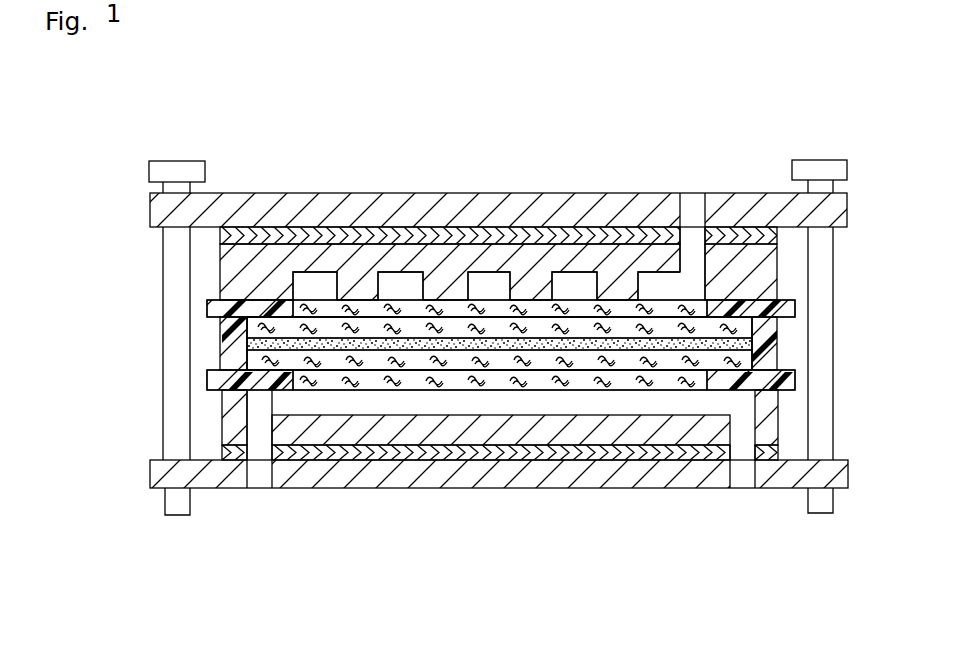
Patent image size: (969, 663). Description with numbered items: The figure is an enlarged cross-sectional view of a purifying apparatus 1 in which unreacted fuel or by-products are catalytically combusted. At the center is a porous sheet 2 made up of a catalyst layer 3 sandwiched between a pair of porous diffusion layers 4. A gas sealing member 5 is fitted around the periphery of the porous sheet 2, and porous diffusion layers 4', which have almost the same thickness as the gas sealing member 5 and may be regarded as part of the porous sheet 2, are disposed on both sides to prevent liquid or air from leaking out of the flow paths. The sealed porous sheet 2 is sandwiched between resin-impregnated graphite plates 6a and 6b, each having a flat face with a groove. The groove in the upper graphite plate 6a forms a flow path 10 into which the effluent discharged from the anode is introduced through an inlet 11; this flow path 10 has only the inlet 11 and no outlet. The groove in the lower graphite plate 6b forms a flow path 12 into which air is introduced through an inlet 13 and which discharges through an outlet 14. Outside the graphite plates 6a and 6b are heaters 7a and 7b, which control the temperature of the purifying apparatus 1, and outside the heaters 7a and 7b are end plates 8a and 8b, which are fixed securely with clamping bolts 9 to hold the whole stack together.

The purifying apparatus 1 is at (746, 114).
The porous sheet 2 is at (883, 305).
The catalyst layer 3 is at (690, 344).
The porous diffusion layers 4 is at (563, 350).
The porous diffusion layers 4' is at (500, 337).
The gas sealing member 5 is at (783, 297).
The resin-impregnated graphite plate 6a is at (748, 262).
The resin-impregnated graphite plate 6b is at (768, 420).
The heater 7a is at (757, 236).
The heater 7b is at (778, 451).
The end plate 8a is at (835, 207).
The end plate 8b is at (808, 476).
The clamping bolts 9 is at (820, 170).
The flow path 10 is at (402, 290).
The inlet 11 is at (690, 208).
The flow path 12 is at (470, 400).
The inlet 13 is at (741, 480).
The outlet 14 is at (258, 480).